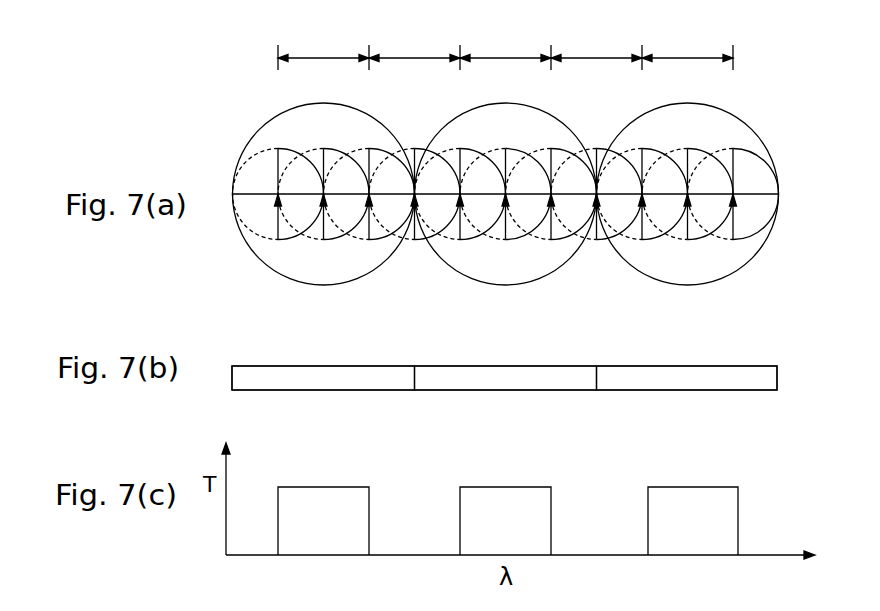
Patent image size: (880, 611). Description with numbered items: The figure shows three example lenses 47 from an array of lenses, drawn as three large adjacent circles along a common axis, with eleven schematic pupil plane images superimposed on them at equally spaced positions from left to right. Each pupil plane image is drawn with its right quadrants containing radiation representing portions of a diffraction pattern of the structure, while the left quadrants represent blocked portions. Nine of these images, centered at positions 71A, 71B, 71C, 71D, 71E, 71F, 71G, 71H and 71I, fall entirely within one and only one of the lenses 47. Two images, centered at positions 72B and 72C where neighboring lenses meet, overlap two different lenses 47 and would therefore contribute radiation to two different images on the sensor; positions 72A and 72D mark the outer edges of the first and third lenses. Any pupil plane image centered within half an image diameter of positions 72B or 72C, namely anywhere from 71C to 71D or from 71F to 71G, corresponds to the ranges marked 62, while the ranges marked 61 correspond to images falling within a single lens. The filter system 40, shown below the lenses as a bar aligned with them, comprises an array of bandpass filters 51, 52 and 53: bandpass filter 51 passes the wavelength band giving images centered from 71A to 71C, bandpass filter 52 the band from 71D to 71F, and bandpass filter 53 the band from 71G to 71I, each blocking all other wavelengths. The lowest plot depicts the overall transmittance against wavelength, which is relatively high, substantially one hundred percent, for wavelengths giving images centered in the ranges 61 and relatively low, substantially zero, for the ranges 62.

In FIG. 7A, the lens 47 is at (271, 119).
In FIG. 7A, the passed position range 61 is at (313, 54).
In FIG. 7A, the filtered position range 62 is at (404, 54).
In FIG. 7A, the pupil plane image position 72A is at (232, 258).
In FIG. 7A, the pupil plane image position 71A is at (278, 258).
In FIG. 7A, the pupil plane image position 71B is at (324, 258).
In FIG. 7A, the pupil plane image position 71C is at (369, 258).
In FIG. 7A, the pupil plane image position 72B is at (414, 258).
In FIG. 7A, the pupil plane image position 71D is at (460, 258).
In FIG. 7A, the pupil plane image position 71E is at (506, 258).
In FIG. 7A, the pupil plane image position 71F is at (551, 258).
In FIG. 7A, the pupil plane image position 72C is at (596, 258).
In FIG. 7A, the pupil plane image position 71G is at (642, 258).
In FIG. 7A, the pupil plane image position 71H is at (688, 258).
In FIG. 7A, the pupil plane image position 71I is at (733, 258).
In FIG. 7A, the pupil plane image position 72D is at (778, 258).
In FIG. 7B, the filter system 40 is at (537, 378).
In FIG. 7B, the bandpass filter 51 is at (313, 387).
In FIG. 7B, the bandpass filter 52 is at (495, 387).
In FIG. 7B, the bandpass filter 53 is at (677, 387).